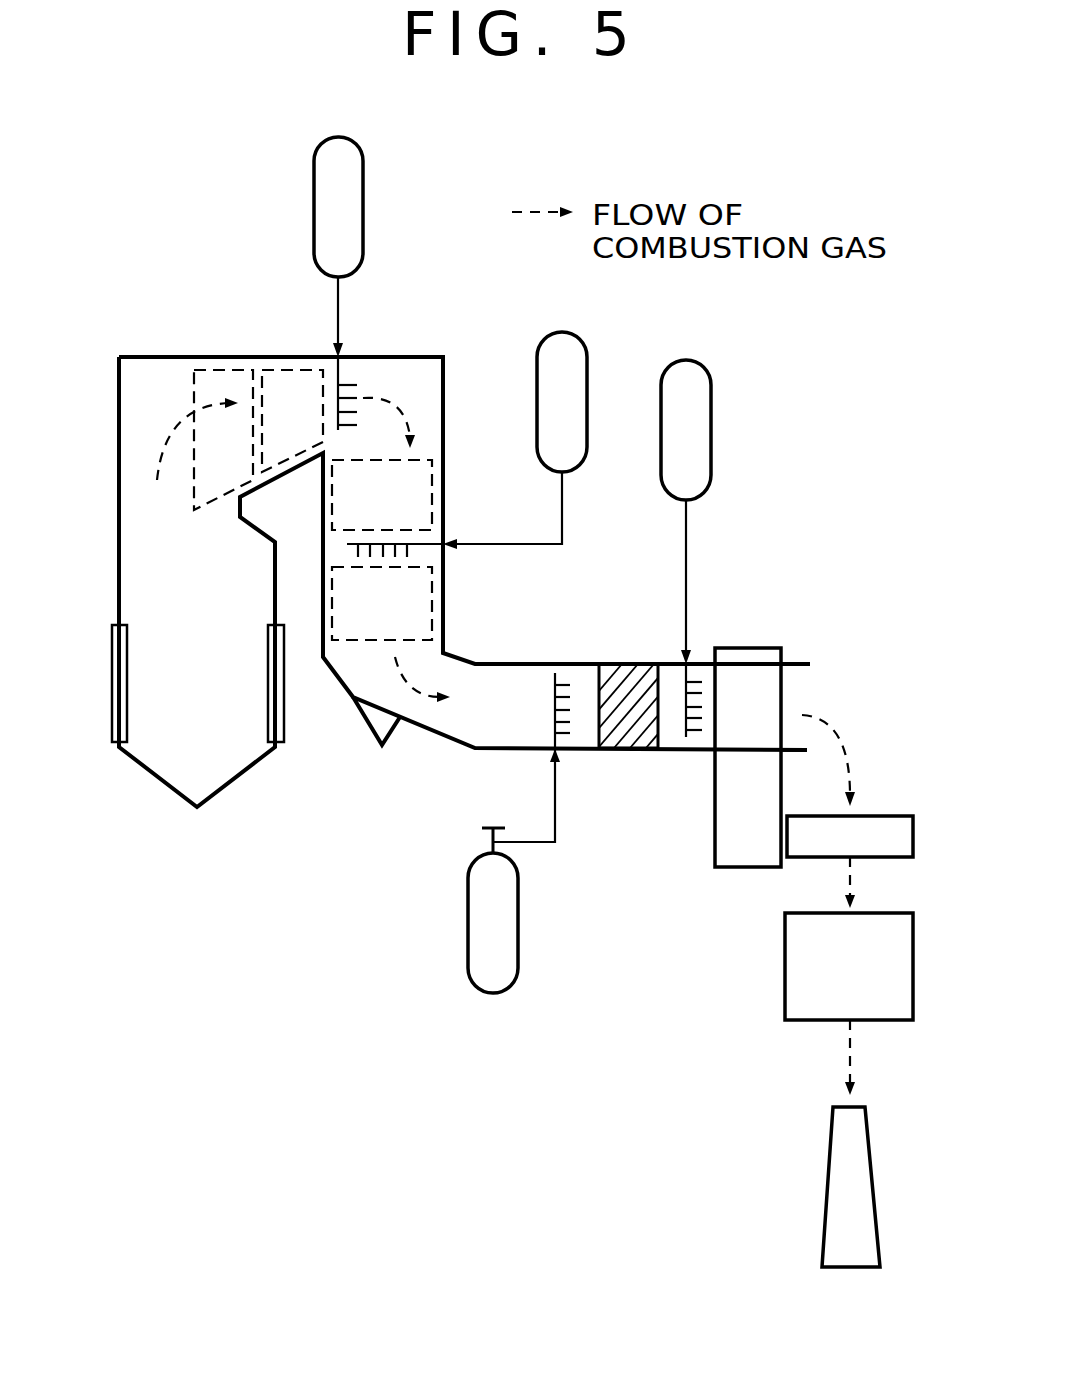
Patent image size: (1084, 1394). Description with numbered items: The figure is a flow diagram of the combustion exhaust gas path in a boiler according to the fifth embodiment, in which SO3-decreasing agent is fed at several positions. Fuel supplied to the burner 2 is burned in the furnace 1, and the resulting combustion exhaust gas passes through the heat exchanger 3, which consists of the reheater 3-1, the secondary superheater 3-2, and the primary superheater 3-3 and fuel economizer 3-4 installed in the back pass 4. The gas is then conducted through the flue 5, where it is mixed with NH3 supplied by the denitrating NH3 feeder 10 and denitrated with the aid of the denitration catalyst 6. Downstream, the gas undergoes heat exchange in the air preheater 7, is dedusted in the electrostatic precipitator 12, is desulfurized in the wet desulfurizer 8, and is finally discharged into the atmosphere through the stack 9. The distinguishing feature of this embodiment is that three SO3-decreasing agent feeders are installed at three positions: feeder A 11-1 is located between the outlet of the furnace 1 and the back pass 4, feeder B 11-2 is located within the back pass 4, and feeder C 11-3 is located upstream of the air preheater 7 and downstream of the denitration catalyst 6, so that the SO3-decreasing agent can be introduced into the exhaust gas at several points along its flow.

The furnace 1 is at (210, 642).
The burner 2 is at (112, 740).
The heat exchanger 3 is at (455, 370).
The reheater 3-1 is at (218, 375).
The secondary superheater 3-2 is at (288, 373).
The primary superheater 3-3 is at (432, 508).
The fuel economizer 3-4 is at (432, 604).
The back pass 4 is at (443, 632).
The flue 5 is at (800, 664).
The denitration catalyst 6 is at (628, 664).
The air preheater 7 is at (744, 647).
The wet desulfurizer 8 is at (785, 968).
The stack 9 is at (828, 1175).
The denitrating NH3 feeder 10 is at (468, 925).
The SO3-decreasing agent feeder A 11-1 is at (362, 220).
The SO3-decreasing agent feeder B 11-2 is at (583, 457).
The SO3-decreasing agent feeder C 11-3 is at (708, 477).
The electrostatic precipitator 12 is at (888, 816).